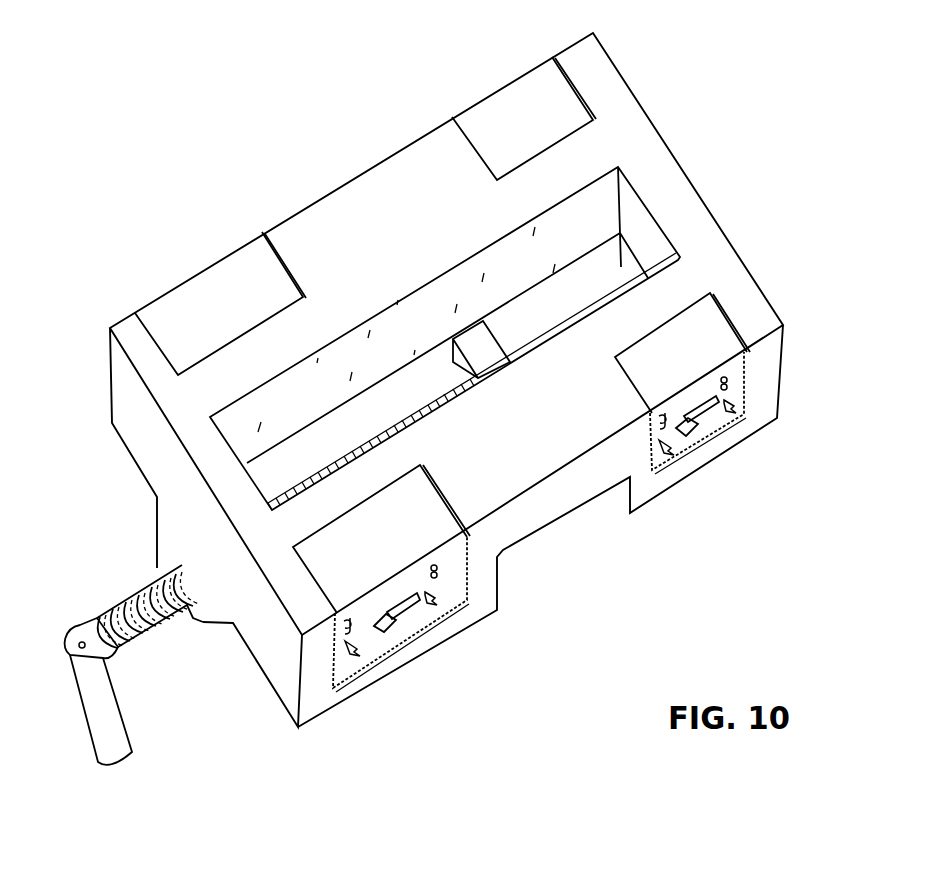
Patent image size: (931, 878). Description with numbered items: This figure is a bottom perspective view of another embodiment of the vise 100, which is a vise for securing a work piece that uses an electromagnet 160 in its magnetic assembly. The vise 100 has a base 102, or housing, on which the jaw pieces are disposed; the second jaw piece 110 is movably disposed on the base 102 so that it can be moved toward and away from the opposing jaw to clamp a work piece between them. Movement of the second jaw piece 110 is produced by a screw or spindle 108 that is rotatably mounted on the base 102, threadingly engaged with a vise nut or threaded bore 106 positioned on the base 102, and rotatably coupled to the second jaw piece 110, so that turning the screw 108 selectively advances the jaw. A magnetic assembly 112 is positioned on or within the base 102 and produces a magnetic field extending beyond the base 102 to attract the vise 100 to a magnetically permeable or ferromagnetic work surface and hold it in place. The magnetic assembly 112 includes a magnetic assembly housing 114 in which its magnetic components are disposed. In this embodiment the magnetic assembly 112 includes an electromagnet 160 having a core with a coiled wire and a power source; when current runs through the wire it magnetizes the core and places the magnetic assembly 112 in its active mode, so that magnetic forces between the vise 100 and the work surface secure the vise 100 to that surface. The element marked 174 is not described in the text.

The vise 100 is at (266, 128).
The base 102 is at (273, 690).
The vise nut or threaded bore 106 is at (203, 623).
The screw or spindle 108 is at (122, 598).
The second jaw piece 110 is at (500, 332).
The magnetic assembly 112 is at (182, 278).
The magnetic assembly housing 114 is at (216, 277).
The electromagnet 160 is at (458, 648).
The control panel buttons 174 is at (385, 626).